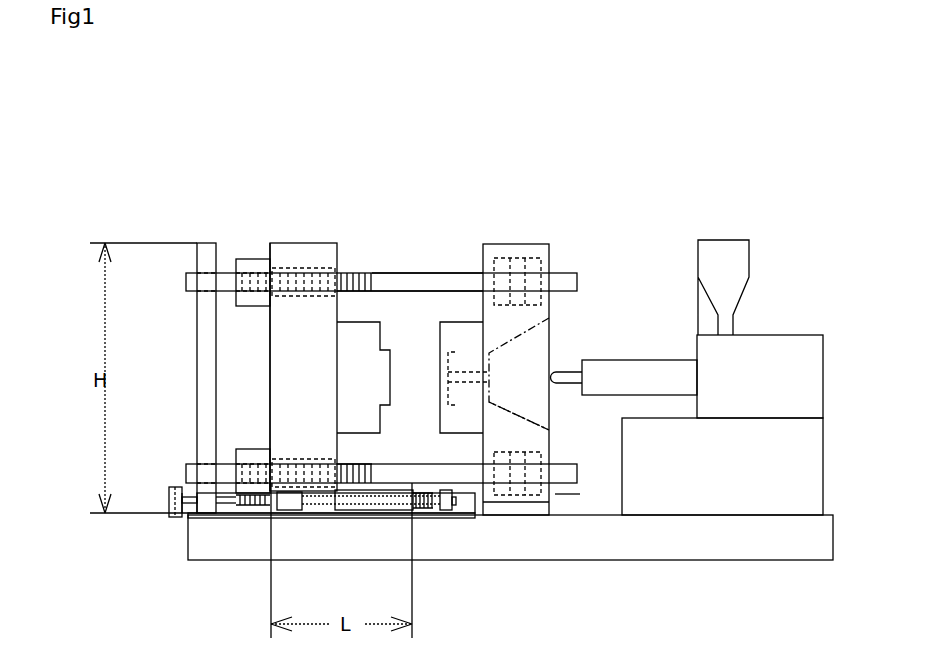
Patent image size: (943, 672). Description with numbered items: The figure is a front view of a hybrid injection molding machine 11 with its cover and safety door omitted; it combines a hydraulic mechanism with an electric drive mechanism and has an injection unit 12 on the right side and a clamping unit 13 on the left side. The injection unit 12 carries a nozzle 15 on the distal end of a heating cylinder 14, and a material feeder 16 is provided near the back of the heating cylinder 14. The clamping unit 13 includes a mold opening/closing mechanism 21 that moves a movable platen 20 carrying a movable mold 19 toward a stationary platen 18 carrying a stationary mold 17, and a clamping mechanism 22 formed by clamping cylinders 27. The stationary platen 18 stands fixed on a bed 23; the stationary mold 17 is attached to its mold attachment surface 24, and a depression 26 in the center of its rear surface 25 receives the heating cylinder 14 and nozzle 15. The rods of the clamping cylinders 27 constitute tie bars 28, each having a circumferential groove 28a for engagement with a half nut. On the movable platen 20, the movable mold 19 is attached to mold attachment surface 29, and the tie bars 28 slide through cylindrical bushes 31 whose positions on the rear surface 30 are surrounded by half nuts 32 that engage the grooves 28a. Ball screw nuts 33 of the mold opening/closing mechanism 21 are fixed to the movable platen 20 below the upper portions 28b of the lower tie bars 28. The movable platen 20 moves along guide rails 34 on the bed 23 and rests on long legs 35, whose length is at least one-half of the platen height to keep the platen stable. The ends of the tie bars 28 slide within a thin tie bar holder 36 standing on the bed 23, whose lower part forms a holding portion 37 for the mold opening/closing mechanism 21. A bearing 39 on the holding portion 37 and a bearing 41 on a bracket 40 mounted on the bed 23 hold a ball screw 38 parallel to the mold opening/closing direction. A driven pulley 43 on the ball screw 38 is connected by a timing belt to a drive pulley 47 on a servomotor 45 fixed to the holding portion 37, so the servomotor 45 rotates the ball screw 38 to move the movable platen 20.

The injection molding machine 11 is at (610, 146).
The injection unit 12 is at (708, 198).
The clamping unit 13 is at (443, 168).
The heating cylinder 14 is at (635, 383).
The nozzle 15 is at (563, 378).
The material feeder 16 is at (735, 258).
The stationary mold 17 is at (453, 335).
The stationary platen 18 is at (568, 250).
The movable mold 19 is at (370, 336).
The movable platen 20 is at (296, 229).
The mold opening/closing mechanism 21 is at (262, 545).
The clamping mechanism 22 is at (541, 232).
The bed 23 is at (805, 530).
The mold attachment surface 24 is at (483, 305).
The rear surface 25 is at (550, 312).
The depression 26 is at (522, 417).
The clamping cylinders 27 is at (515, 272).
The tie bars 28 is at (424, 283).
The groove 28a is at (348, 275).
The upper portions 28b is at (424, 462).
The mold attachment surface 29 is at (337, 303).
The rear surface 30 is at (270, 363).
The cylindrical bushes 31 is at (318, 268).
The half nuts 32 is at (252, 265).
The ball screw nuts 33 is at (290, 511).
The guide rails 34 is at (360, 496).
The legs 35 is at (390, 509).
The tie bar holder 36 is at (208, 258).
The holding portion 37 is at (197, 493).
The ball screw 38 is at (422, 506).
The bearing 39 is at (210, 512).
The bracket 40 is at (445, 496).
The bearing 41 is at (448, 512).
The driven pulley 43 is at (170, 492).
The servomotor 45 is at (237, 513).
The drive pulley 47 is at (178, 519).